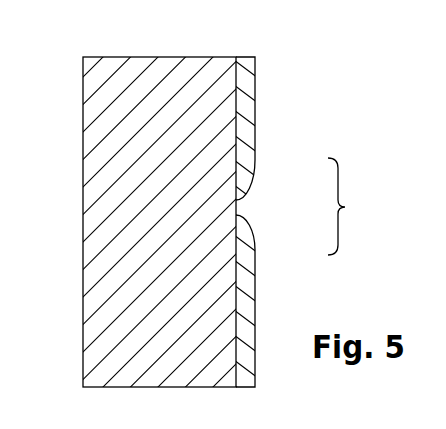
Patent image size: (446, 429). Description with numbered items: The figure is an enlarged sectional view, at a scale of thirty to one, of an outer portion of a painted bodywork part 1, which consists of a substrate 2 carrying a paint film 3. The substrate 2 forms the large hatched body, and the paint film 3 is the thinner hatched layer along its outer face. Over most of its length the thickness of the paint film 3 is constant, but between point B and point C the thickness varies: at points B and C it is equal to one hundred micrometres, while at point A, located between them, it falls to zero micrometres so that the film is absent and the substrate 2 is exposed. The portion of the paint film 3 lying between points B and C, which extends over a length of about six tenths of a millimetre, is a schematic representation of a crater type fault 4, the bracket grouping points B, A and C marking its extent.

The painted bodywork part 1 is at (160, 33).
The substrate 2 is at (108, 118).
The paint film 3 is at (257, 113).
The crater type fault 4 is at (344, 206).
The point A is at (236, 208).
The point B is at (236, 160).
The point C is at (236, 256).